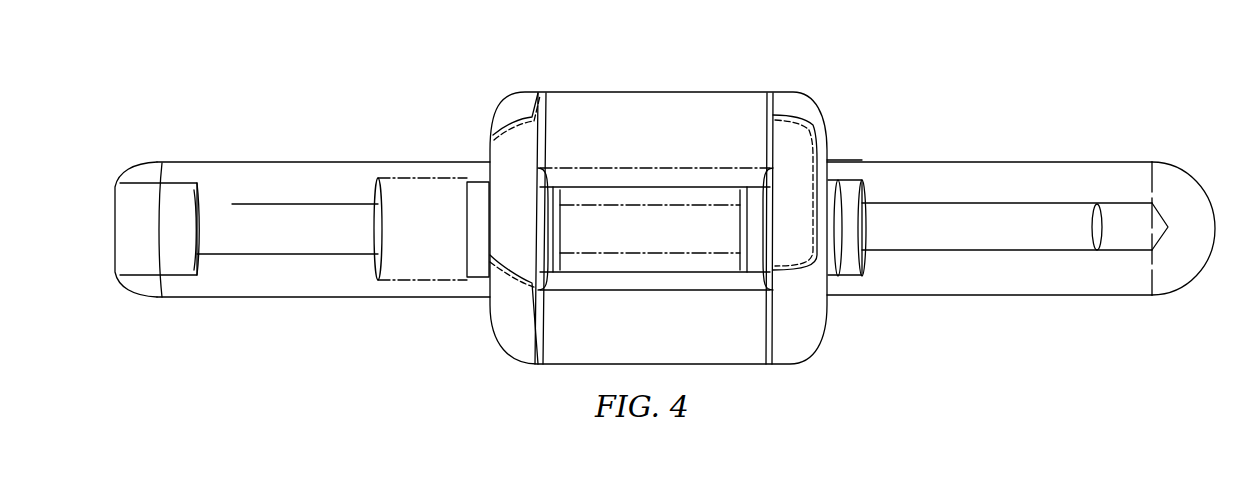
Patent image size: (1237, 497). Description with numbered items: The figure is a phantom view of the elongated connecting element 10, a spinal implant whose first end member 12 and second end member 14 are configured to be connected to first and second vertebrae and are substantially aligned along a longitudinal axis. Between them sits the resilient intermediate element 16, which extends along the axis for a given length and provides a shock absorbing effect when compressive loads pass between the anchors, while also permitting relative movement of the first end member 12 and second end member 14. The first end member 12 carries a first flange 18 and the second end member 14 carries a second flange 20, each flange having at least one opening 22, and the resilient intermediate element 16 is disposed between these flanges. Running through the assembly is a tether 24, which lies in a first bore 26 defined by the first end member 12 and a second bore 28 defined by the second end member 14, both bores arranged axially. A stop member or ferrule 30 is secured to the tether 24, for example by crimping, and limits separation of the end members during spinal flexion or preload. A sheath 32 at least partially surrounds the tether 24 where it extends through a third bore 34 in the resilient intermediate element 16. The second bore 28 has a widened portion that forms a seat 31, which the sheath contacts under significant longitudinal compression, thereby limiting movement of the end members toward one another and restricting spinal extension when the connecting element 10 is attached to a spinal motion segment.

The elongated connecting element 10 is at (326, 90).
The first end member 12 is at (1010, 160).
The second end member 14 is at (300, 162).
The resilient intermediate element 16 is at (682, 92).
The first flange 18 is at (822, 335).
The second flange 20 is at (490, 330).
The opening 22 is at (526, 136).
The tether 24 is at (1053, 253).
The first bore 26 is at (1133, 240).
The second bore 28 is at (422, 268).
The ferrule 30 is at (152, 183).
The seat 31 is at (383, 190).
The sheath 32 is at (643, 272).
The third bore 34 is at (690, 280).